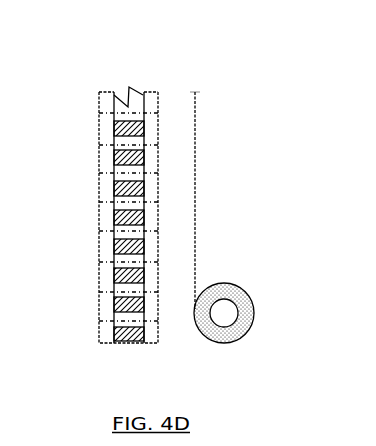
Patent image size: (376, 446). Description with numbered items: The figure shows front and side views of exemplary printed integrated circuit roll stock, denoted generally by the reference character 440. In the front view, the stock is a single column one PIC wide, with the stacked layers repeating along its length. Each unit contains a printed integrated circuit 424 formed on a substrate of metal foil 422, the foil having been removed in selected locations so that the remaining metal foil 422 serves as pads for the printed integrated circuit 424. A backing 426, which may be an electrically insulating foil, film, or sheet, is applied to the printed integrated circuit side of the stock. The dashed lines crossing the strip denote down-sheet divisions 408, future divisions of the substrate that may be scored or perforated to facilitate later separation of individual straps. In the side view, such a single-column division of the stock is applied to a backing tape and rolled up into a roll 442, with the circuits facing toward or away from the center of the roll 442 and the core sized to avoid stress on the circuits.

The down-sheet divisions 408 is at (108, 292).
The metal foil 422 is at (108, 128).
The printed integrated circuit 424 is at (113, 166).
The backing 426 is at (113, 251).
The roll of PIC stock 440 is at (240, 63).
The roll 442 is at (255, 308).